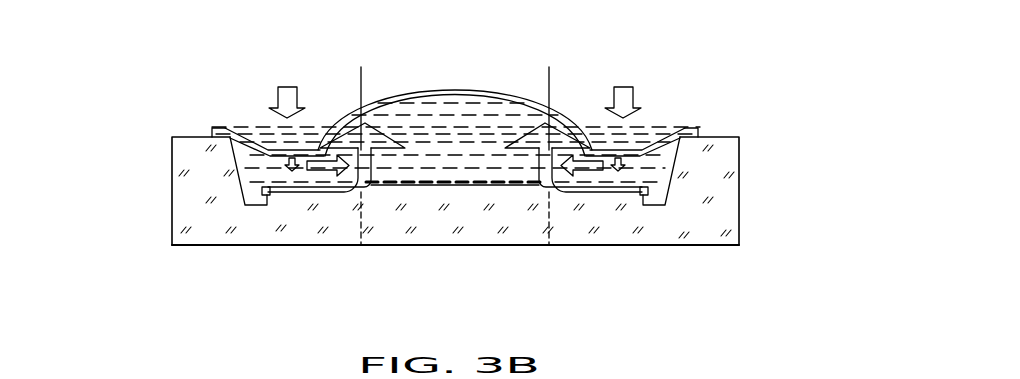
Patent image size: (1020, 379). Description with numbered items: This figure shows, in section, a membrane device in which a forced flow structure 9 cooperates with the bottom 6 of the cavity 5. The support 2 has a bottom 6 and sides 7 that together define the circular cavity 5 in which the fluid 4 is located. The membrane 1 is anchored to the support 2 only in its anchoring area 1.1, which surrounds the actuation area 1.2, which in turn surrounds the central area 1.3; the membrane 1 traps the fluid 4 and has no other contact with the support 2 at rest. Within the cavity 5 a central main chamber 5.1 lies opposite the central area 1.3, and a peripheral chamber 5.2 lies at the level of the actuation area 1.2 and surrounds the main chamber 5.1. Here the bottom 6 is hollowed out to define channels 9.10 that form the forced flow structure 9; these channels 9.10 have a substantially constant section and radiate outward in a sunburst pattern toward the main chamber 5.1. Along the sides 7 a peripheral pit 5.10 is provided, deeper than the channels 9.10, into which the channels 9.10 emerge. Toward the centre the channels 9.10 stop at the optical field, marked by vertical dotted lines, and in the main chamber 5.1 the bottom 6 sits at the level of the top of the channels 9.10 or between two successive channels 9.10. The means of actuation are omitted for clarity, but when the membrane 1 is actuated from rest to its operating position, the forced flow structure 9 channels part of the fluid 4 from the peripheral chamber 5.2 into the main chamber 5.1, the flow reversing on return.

The membrane 1 is at (470, 89).
The anchoring area 1.1 is at (693, 127).
The actuation area 1.2 is at (606, 148).
The central area 1.3 is at (473, 92).
The support 2 is at (730, 201).
The fluid 4 is at (505, 172).
The cavity 5 is at (323, 223).
The main chamber 5.1 is at (441, 177).
The peripheral chamber 5.2 is at (316, 160).
The peripheral pit 5.10 is at (258, 195).
The bottom 6 is at (525, 184).
The sides 7 is at (233, 163).
The forced flow structure 9 is at (483, 225).
The channels 9.10 is at (617, 190).